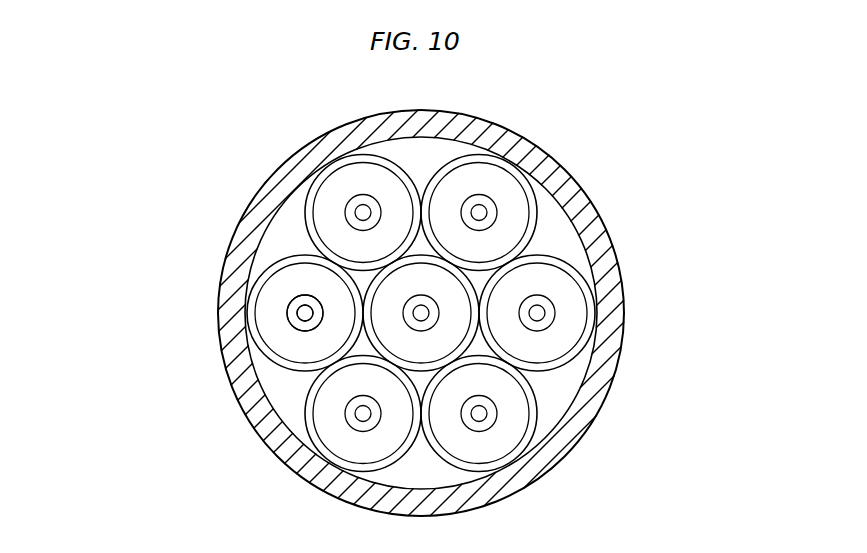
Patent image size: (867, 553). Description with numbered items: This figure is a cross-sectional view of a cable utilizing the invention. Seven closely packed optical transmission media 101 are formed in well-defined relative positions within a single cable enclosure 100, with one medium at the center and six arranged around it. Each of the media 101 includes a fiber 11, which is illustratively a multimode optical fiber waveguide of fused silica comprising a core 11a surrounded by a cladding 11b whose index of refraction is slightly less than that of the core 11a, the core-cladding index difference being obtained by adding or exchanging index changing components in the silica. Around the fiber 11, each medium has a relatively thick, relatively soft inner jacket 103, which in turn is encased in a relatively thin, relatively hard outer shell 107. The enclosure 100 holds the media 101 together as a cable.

The enclosure 100 is at (543, 153).
The closely packed optical transmission media 101 is at (512, 420).
The inner jacket 103 is at (288, 282).
The outer shell 107 is at (260, 285).
The fiber 11 is at (302, 312).
The core 11a is at (297, 322).
The cladding 11b is at (287, 323).